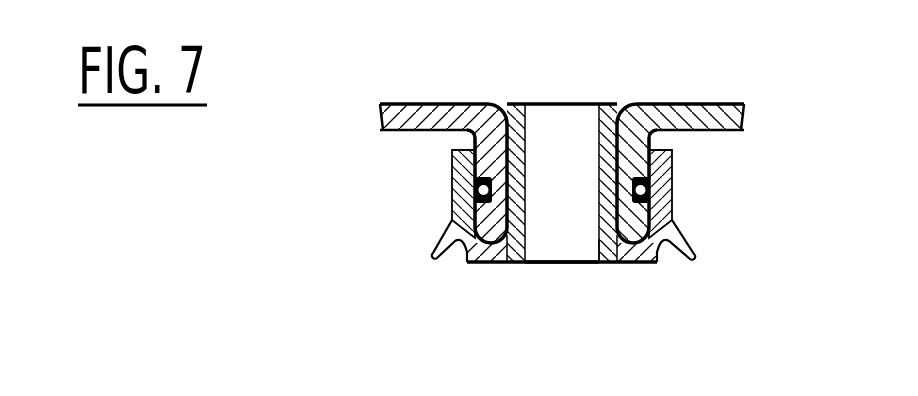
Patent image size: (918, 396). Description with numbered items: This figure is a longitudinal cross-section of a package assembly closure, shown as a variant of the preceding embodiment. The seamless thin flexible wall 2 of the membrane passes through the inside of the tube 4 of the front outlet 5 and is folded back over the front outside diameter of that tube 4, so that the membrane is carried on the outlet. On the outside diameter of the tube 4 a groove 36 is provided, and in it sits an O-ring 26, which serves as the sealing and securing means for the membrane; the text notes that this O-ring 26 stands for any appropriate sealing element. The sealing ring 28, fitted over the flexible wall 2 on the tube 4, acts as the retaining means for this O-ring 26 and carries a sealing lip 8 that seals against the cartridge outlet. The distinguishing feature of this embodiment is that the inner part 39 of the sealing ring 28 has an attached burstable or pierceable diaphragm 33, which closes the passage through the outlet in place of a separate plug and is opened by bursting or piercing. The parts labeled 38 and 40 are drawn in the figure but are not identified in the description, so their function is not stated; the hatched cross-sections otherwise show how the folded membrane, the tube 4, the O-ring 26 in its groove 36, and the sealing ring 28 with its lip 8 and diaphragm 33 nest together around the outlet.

The flexible wall 2 is at (479, 99).
The front outlet 5 is at (430, 99).
The second bracket wall 40 is at (611, 99).
The burstable or pierceable diaphragm 33 is at (548, 98).
The elastomer block 38 is at (451, 151).
The sealing lip 8 is at (432, 248).
The groove 36 is at (648, 264).
The tube 4 is at (482, 264).
The inner part 39 is at (552, 264).
The sealing ring 28 is at (613, 264).
The O-ring 26 is at (642, 195).